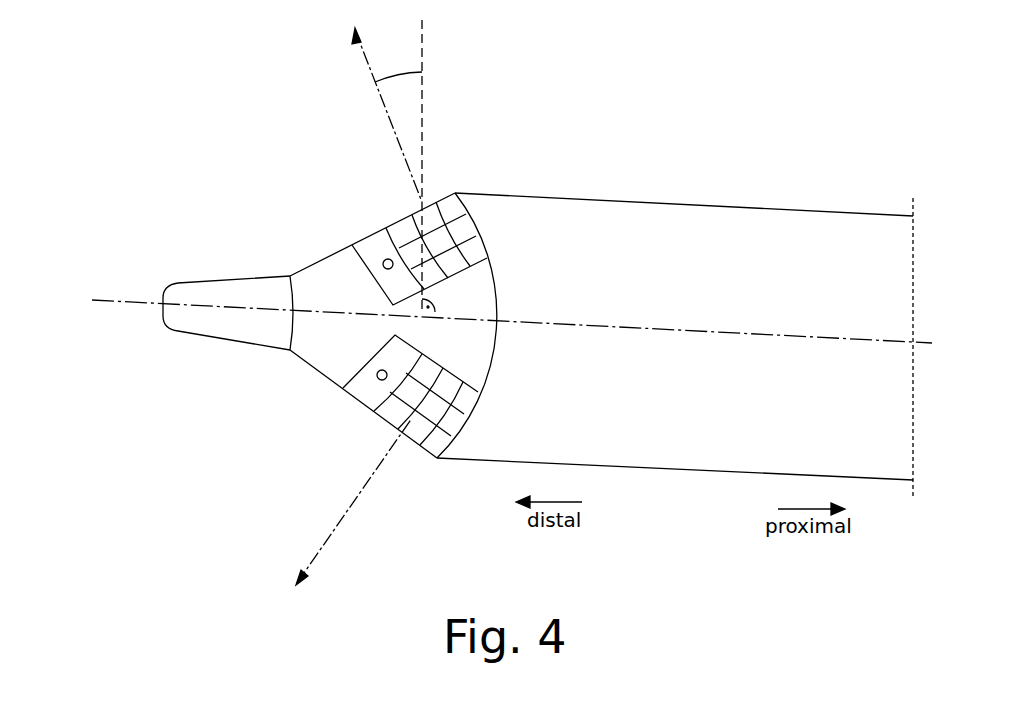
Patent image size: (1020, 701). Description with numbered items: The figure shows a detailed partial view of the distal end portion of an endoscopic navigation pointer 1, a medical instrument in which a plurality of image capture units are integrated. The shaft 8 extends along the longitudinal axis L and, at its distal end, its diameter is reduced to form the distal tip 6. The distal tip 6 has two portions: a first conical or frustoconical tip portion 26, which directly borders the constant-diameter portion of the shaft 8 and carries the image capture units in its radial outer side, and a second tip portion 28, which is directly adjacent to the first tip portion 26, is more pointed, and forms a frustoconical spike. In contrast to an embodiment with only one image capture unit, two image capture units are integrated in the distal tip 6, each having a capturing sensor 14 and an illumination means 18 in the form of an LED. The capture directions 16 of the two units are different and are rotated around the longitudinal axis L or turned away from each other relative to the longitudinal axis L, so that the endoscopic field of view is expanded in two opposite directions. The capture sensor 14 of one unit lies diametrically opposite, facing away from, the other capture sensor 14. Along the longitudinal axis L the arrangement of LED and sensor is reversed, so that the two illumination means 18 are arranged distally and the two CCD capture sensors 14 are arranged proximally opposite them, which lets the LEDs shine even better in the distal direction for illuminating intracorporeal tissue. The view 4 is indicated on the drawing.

The endoscopic navigation pointer 1 is at (120, 76).
The end effector / distal portion 4 is at (548, 101).
The distal tip 6 is at (278, 388).
The shaft 8 is at (688, 205).
The capturing sensor 14 is at (428, 198).
The capture direction 16 is at (363, 55).
The illumination means 18 is at (355, 240).
The first conical tip portion 26 is at (310, 268).
The second tip portion 28 is at (215, 280).
The longitudinal axis L is at (137, 300).